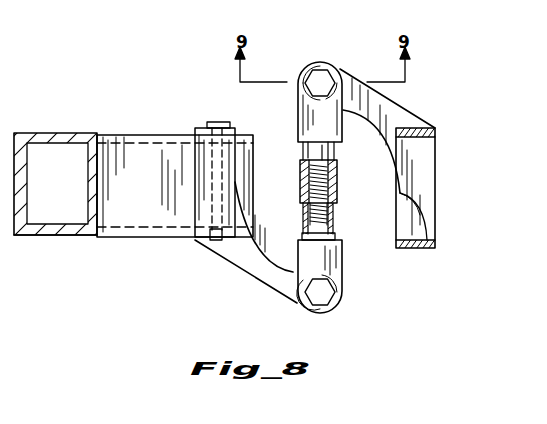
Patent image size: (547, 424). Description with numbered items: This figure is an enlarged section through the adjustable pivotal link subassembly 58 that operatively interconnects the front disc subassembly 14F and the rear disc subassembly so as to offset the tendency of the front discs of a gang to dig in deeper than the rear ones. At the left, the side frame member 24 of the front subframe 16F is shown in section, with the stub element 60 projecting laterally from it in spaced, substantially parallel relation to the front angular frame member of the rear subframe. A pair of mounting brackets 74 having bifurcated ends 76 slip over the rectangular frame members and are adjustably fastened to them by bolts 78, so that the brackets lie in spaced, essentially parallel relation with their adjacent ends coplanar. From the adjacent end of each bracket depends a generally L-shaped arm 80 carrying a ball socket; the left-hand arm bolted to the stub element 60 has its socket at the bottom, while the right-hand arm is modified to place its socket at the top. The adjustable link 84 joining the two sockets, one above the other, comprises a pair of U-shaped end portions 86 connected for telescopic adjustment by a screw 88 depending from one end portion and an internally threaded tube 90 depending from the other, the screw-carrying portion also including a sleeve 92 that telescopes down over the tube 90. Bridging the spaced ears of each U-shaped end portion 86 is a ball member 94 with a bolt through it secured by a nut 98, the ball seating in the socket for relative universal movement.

The longitudinally extending parallel member 24 is at (62, 133).
The front disc subassembly 14F is at (120, 132).
The front subframe 16F is at (50, 236).
The link subassembly 58 is at (263, 194).
The stub element 60 is at (137, 240).
The bolt 78 is at (221, 122).
The L-shaped arm 80 is at (383, 108).
The U-shaped end portion 86 is at (298, 106).
The ball member 94 is at (334, 70).
The nut 98 is at (318, 64).
The adjustable link 84 is at (303, 158).
The screw 88 is at (328, 177).
The sleeve 92 is at (303, 200).
The internally threaded tube 90 is at (302, 240).
The mounting bracket 74 is at (397, 228).
The bifurcated end 76 is at (400, 191).